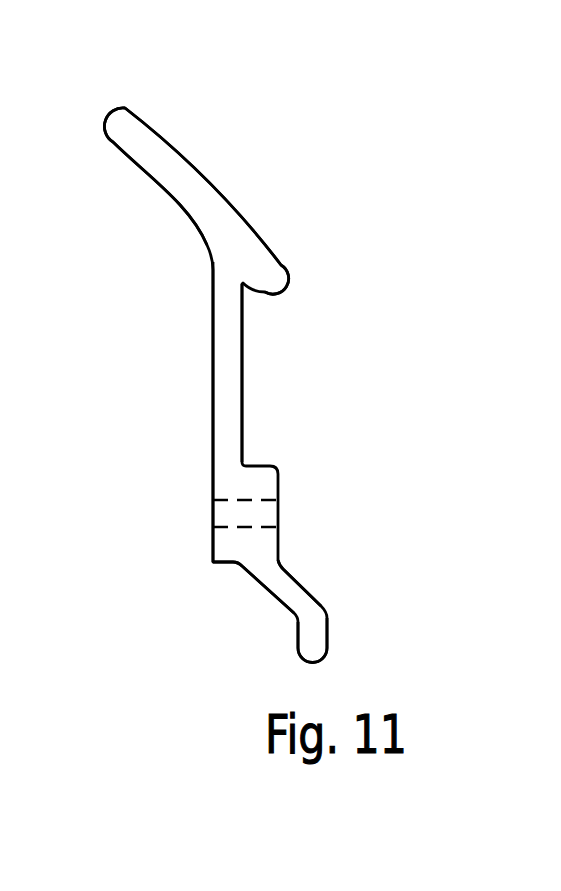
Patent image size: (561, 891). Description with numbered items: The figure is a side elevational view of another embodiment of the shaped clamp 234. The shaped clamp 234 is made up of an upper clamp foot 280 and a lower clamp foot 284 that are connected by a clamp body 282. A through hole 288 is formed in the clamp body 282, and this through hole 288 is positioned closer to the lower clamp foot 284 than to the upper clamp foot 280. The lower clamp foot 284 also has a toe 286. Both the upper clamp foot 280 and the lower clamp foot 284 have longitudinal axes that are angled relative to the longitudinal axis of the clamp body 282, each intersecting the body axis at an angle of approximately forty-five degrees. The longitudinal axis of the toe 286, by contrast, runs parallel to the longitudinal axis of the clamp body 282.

The shaped clamp 234 is at (362, 110).
The upper clamp foot 280 is at (152, 178).
The clamp body 282 is at (243, 371).
The lower clamp foot 284 is at (270, 593).
The toe 286 is at (328, 632).
The through hole 288 is at (252, 497).